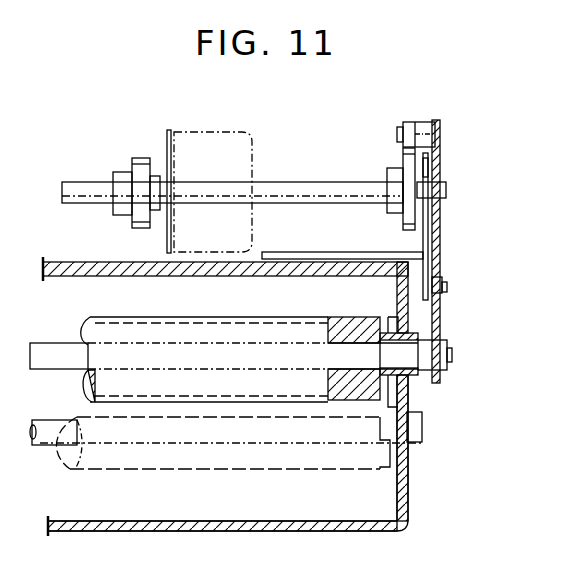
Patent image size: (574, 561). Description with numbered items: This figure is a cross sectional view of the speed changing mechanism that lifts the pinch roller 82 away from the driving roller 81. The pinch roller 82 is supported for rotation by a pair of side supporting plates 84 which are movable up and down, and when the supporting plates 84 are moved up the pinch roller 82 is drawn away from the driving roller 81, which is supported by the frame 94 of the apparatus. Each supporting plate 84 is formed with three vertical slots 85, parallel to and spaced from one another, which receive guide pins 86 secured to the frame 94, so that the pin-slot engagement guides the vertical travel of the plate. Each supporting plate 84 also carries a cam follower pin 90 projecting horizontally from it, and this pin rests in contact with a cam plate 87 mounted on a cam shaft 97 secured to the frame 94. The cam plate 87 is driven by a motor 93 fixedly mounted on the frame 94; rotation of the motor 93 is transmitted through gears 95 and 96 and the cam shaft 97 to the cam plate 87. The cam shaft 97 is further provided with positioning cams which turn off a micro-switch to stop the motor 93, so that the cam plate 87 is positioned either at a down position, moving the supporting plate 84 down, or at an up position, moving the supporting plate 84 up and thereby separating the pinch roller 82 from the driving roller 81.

The driving roller 81 is at (206, 471).
The pinch roller 82 is at (272, 316).
The supporting plate 84 is at (440, 240).
The vertical slot 85 is at (443, 270).
The guide pin 86 is at (447, 288).
The cam plate 87 is at (405, 153).
The cam follower pin 90 is at (409, 121).
The motor 93 is at (203, 131).
The frame 94 is at (57, 278).
The gear 95 is at (128, 172).
The gear 96 is at (142, 157).
The cam shaft 97 is at (302, 181).